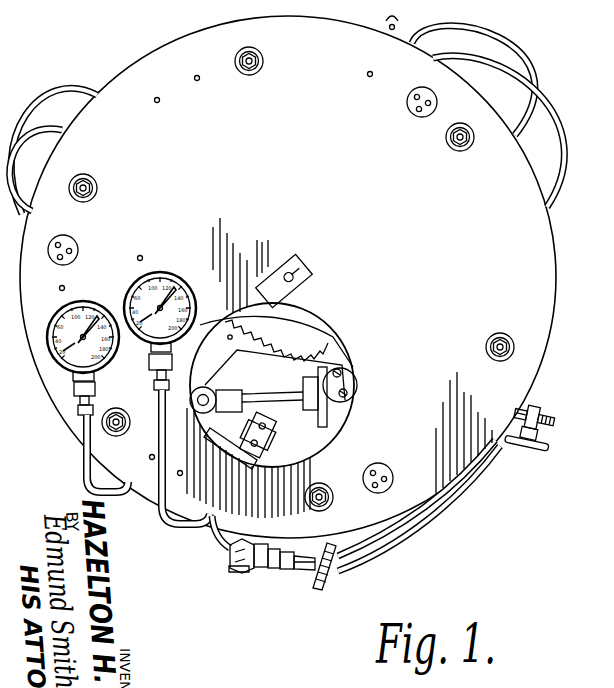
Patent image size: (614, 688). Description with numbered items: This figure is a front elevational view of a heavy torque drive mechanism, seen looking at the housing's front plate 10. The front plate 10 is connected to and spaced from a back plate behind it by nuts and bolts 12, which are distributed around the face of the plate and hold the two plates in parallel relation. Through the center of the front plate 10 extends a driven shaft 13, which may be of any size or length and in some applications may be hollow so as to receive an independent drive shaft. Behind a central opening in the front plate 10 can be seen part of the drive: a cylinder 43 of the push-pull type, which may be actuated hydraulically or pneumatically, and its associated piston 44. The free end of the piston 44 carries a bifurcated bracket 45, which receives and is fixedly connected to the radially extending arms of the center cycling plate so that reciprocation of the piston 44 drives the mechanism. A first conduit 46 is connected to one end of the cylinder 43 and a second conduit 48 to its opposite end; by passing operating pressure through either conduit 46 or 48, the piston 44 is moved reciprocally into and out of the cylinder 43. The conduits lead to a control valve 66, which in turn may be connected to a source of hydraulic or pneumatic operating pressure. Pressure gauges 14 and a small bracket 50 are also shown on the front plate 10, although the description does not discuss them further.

The front plate 10 is at (540, 294).
The nuts and bolts 12 is at (258, 45).
The driven shaft 13 is at (302, 288).
The pressure gauges 14 is at (138, 410).
The cylinder 43 is at (322, 416).
The piston 44 is at (424, 118).
The bifurcated bracket 45 is at (238, 395).
The first conduit 46 is at (57, 92).
The second conduit 48 is at (40, 128).
The bracket 50 is at (531, 426).
The control valve 66 is at (230, 564).